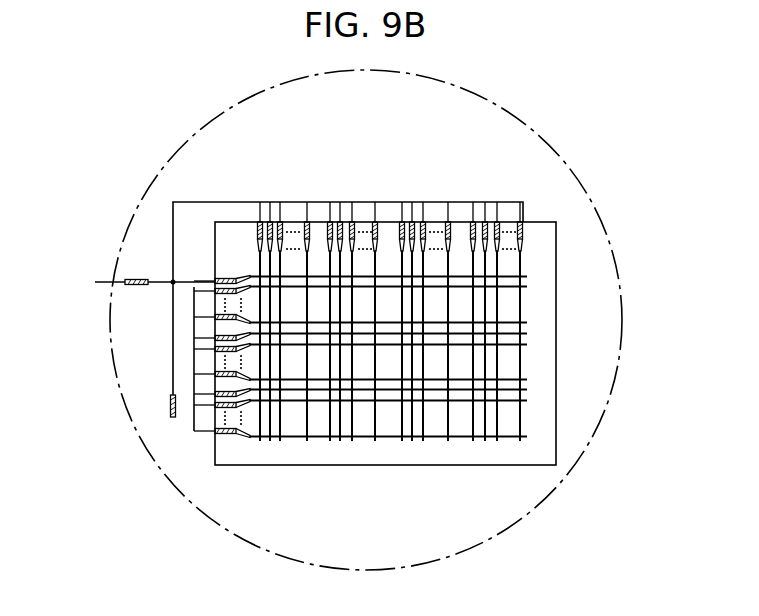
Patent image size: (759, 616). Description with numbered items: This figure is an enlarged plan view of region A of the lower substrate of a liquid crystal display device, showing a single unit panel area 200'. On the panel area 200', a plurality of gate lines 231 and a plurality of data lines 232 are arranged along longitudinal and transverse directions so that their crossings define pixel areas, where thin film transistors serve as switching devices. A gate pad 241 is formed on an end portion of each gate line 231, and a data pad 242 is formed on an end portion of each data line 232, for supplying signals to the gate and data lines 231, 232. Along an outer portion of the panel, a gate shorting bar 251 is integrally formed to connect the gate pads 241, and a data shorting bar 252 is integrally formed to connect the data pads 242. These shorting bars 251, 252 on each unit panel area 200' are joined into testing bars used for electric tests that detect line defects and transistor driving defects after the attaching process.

The unit panel area 200' is at (372, 327).
The data pad 242 is at (557, 228).
The gate lines 231 is at (508, 322).
The data lines 232 is at (490, 362).
The gate pad 241 is at (227, 453).
The gate shorting bar 251 is at (137, 283).
The data shorting bar 252 is at (171, 408).
The region A is at (110, 356).